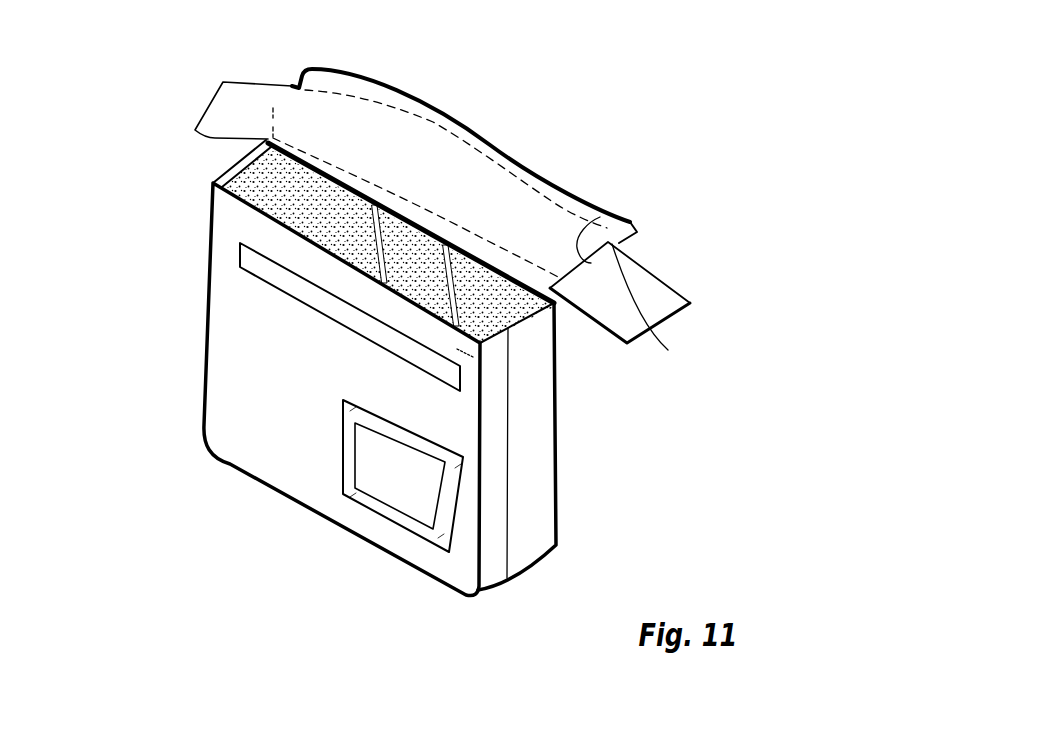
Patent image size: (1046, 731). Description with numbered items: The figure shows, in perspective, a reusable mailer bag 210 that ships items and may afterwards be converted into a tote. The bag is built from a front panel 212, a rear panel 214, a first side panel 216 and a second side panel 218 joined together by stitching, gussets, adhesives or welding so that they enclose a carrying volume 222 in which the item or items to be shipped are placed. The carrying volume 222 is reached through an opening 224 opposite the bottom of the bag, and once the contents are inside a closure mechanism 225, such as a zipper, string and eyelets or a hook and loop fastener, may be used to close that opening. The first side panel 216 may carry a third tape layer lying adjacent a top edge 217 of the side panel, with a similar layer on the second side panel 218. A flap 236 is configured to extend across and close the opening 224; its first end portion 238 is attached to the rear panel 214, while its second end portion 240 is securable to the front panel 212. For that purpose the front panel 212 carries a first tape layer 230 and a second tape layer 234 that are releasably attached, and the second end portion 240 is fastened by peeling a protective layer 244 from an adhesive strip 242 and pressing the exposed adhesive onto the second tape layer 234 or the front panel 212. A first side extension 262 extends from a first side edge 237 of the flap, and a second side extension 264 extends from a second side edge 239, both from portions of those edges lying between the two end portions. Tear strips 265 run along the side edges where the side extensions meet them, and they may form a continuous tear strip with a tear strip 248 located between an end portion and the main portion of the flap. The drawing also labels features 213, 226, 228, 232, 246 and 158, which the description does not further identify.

The mailer bag 210 is at (68, 89).
The front panel 212 is at (233, 328).
The divider 213 is at (374, 208).
The rear panel 214 is at (482, 278).
The first side panel 216 is at (541, 502).
The top edge 217 is at (498, 335).
The second side panel 218 is at (222, 175).
The carrying volume 222 is at (306, 227).
The opening 224 is at (406, 288).
The closure mechanism 225 is at (518, 302).
The cushion layer 226 is at (411, 245).
The separator 228 is at (440, 262).
The first tape layer 230 is at (423, 529).
The address label 232 is at (376, 490).
The second tape layer 234 is at (242, 253).
The flap 236 is at (597, 252).
The first side edge 237 is at (600, 218).
The first end portion 238 is at (472, 250).
The second side edge 239 is at (280, 112).
The second end portion 240 is at (327, 78).
The adhesive strip 242 is at (638, 223).
The protective layer 244 is at (572, 207).
The fold line 246 is at (297, 133).
The tear strip 248 is at (543, 200).
The first side extension 262 is at (662, 310).
The second side extension 264 is at (272, 118).
The tear strips 265 is at (273, 102).
The liner 158 is at (382, 205).